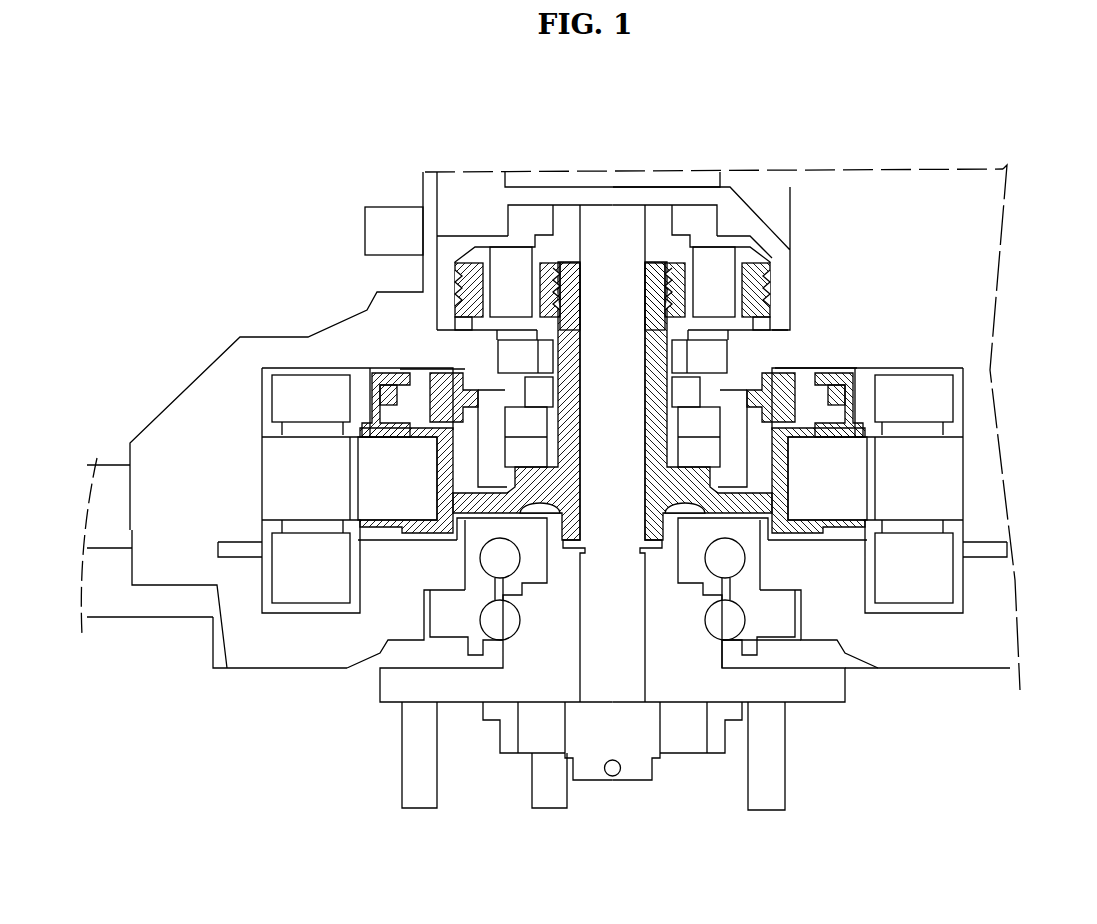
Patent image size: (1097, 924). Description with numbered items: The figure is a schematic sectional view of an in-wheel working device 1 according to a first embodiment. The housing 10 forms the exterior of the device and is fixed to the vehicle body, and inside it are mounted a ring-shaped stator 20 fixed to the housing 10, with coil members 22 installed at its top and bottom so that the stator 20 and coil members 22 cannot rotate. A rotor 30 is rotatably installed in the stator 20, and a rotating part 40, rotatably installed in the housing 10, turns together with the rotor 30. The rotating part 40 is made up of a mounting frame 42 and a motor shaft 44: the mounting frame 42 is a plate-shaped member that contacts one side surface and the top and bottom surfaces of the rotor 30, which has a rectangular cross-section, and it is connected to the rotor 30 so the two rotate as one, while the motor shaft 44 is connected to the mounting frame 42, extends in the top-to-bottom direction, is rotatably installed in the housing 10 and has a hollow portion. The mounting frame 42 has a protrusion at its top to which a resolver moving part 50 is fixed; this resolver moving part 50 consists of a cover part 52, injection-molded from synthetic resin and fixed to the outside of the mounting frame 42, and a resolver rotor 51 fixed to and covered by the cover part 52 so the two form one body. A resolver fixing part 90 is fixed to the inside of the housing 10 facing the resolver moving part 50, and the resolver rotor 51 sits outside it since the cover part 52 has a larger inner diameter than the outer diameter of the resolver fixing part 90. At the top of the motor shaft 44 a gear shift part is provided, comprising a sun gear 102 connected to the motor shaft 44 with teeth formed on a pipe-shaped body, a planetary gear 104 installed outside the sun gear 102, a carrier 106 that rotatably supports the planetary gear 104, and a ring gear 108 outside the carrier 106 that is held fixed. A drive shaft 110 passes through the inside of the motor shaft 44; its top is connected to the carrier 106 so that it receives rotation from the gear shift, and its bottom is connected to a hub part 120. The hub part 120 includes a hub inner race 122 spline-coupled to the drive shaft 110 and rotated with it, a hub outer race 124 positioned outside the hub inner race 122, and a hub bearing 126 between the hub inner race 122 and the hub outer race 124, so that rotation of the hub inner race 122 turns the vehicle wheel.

The in-wheel working device 1 is at (157, 727).
The housing 10 is at (142, 380).
The stator 20 is at (300, 485).
The coil member 22 is at (290, 395).
The rotor 30 is at (403, 490).
The rotating part 40 is at (612, 593).
The mounting frame 42 is at (447, 478).
The motor shaft 44 is at (548, 495).
The resolver moving part 50 is at (548, 324).
The resolver rotor 51 is at (365, 415).
The cover part 52 is at (405, 385).
The resolver fixing part 90 is at (437, 358).
The sun gear 102 is at (617, 213).
The planetary gear 104 is at (565, 290).
The carrier 106 is at (523, 215).
The ring gear 108 is at (452, 245).
The drive shaft 110 is at (622, 350).
The hub part 120 is at (665, 685).
The hub inner race 122 is at (687, 653).
The hub outer race 124 is at (777, 603).
The hub bearing 126 is at (730, 622).